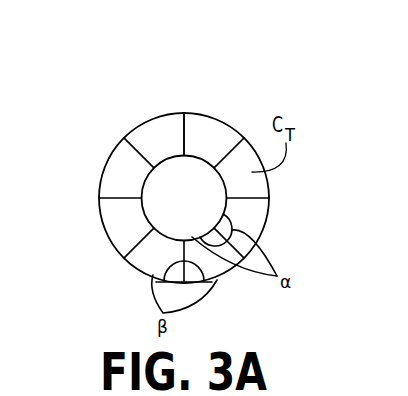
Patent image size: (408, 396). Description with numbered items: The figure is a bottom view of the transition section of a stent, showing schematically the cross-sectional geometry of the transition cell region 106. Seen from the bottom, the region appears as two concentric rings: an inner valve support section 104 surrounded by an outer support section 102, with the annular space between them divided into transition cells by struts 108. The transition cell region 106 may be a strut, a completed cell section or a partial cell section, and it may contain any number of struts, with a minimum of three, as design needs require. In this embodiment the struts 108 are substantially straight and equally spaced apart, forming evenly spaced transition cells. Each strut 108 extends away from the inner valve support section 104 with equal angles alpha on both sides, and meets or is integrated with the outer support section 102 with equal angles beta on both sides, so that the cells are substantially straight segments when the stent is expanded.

The outer support section 102 is at (119, 141).
The inner valve support section 104 is at (150, 204).
The transition cell region 106 is at (259, 75).
The strut 108 is at (186, 131).